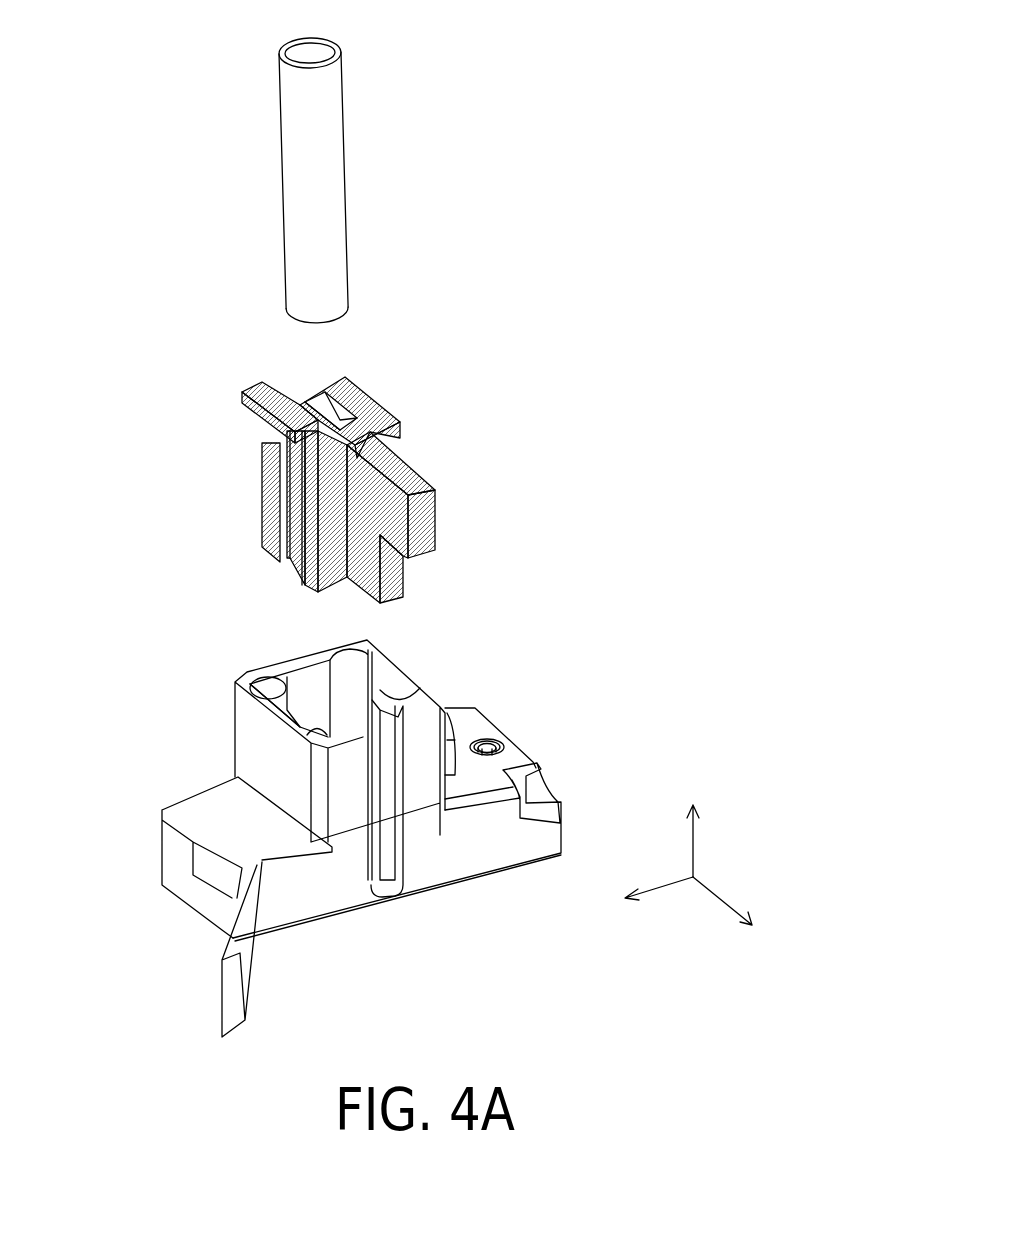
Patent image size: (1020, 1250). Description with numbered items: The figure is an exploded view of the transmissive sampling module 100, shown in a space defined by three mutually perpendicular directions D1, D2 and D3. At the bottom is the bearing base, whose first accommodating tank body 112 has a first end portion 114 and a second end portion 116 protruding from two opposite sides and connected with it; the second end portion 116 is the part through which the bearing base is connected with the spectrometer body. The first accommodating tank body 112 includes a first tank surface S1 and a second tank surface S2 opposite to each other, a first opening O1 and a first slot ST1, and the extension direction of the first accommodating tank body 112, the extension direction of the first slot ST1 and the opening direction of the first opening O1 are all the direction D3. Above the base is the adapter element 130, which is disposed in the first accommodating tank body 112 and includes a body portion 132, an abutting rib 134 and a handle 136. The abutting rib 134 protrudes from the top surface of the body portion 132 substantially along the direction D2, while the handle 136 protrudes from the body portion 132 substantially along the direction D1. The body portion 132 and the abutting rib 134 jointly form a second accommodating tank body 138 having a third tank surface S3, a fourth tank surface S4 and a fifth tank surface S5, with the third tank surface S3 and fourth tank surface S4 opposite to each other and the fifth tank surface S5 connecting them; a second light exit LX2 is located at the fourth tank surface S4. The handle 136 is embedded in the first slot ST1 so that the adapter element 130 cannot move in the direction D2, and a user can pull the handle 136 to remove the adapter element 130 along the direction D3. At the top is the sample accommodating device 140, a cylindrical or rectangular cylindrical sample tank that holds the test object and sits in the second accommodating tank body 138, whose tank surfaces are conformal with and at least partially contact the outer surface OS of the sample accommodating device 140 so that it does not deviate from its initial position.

The transmissive sampling module 100 is at (396, 819).
The first accommodating tank body 112 is at (305, 792).
The first end portion 114 is at (500, 857).
The second end portion 116 is at (198, 810).
The adapter element 130 is at (353, 463).
The body portion 132 is at (368, 400).
The abutting rib 134 is at (262, 436).
The handle 136 is at (410, 470).
The second accommodating tank body 138 is at (317, 476).
The sample accommodating device 140 is at (306, 38).
The first opening O1 is at (313, 698).
The outer surface OS is at (298, 158).
The first tank surface S1 is at (368, 694).
The second tank surface S2 is at (292, 712).
The third tank surface S3 is at (337, 414).
The fourth tank surface S4 is at (285, 380).
The fifth tank surface S5 is at (318, 408).
The first slot ST1 is at (382, 860).
The second light exit LX2 is at (298, 568).
The direction D1 is at (732, 920).
The direction D2 is at (642, 897).
The direction D3 is at (693, 822).